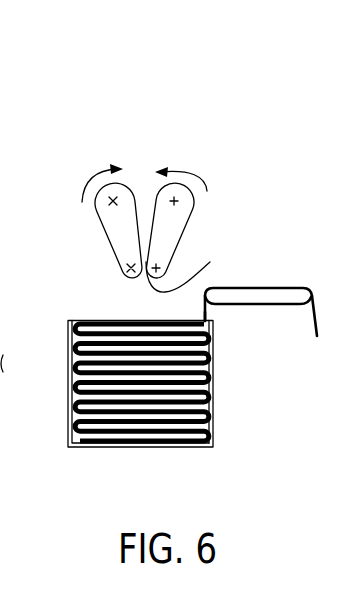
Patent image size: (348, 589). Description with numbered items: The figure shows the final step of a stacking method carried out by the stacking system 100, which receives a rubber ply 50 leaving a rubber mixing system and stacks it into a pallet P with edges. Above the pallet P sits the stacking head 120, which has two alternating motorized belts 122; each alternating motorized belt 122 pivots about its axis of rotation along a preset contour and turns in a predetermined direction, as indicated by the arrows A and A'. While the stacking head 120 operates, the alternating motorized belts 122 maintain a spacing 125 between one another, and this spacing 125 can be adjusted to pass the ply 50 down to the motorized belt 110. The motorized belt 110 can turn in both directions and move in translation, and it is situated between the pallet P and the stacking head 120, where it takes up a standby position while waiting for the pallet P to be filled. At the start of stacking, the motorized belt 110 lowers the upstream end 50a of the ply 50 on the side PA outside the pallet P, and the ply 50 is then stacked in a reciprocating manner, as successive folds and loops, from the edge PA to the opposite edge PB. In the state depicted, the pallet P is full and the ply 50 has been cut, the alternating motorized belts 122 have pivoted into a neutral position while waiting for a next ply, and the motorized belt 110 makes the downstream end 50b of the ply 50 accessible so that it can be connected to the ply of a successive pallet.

The stacking system 100 is at (118, 108).
The stacking head 120 is at (190, 220).
The alternating motorized belts 122 is at (167, 220).
The spacing 125 is at (189, 265).
The ply 50 is at (272, 288).
The upstream end of the ply 50a is at (317, 336).
The downstream end of the ply 50b is at (76, 319).
The motorized belt 110 is at (248, 305).
The pallet with edges P is at (213, 442).
The edge of the pallet PA is at (213, 412).
The opposite edge of the pallet PB is at (68, 430).